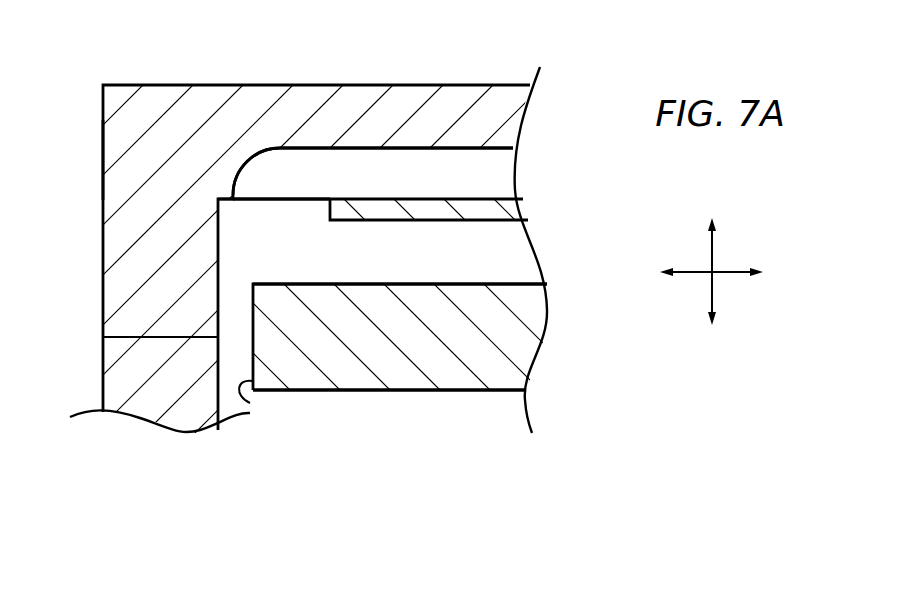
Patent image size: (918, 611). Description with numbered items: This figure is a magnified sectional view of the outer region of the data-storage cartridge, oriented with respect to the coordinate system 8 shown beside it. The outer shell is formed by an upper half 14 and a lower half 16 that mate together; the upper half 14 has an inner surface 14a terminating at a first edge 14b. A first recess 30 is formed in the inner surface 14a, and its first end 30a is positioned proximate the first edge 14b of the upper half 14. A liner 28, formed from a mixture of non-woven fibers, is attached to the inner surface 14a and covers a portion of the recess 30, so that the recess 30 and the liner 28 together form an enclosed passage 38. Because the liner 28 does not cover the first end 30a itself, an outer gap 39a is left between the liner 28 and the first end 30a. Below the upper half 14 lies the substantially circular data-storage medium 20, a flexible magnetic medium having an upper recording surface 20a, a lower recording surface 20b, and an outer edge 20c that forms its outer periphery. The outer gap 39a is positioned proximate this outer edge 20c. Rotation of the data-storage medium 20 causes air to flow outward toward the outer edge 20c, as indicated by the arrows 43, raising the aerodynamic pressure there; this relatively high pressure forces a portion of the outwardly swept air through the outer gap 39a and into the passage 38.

The coordinate system 8 is at (715, 265).
The upper half 14 is at (157, 97).
The inner surface 14a is at (229, 200).
The first edge 14b is at (103, 145).
The lower half 16 is at (117, 388).
The data-storage medium 20 is at (379, 350).
The upper recording surface 20a is at (357, 284).
The lower recording surface 20b is at (349, 391).
The outer edge 20c is at (250, 403).
The liner 28 is at (402, 215).
The first recess 30 is at (467, 148).
The first end 30a is at (235, 181).
The enclosed passage 38 is at (403, 186).
The outer gap 39a is at (298, 199).
The arrows 43 is at (318, 168).